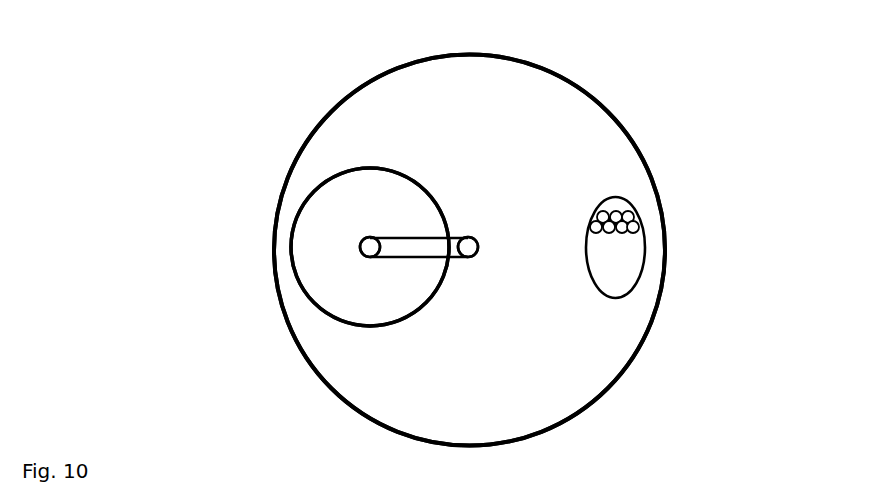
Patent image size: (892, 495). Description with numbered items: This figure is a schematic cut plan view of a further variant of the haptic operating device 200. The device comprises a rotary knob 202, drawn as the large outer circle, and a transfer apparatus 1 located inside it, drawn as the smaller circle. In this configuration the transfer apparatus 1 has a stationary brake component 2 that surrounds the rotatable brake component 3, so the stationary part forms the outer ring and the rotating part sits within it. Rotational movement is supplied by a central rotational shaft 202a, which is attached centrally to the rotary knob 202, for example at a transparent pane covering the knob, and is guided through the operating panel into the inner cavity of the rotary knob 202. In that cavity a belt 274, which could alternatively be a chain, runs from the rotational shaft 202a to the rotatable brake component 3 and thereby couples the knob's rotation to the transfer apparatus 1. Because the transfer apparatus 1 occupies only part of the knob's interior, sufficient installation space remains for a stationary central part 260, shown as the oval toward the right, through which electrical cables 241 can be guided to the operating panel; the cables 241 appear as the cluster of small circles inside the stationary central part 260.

The haptic operating device 200 is at (297, 93).
The rotary knob 202 is at (603, 103).
The transfer apparatus 1 is at (309, 186).
The stationary brake component 2 is at (292, 256).
The belt 274 is at (431, 238).
The rotatable brake component 3 is at (368, 262).
The rotational shaft 202a is at (465, 262).
The stationary central part 260 is at (632, 208).
The electrical cables 241 is at (638, 226).